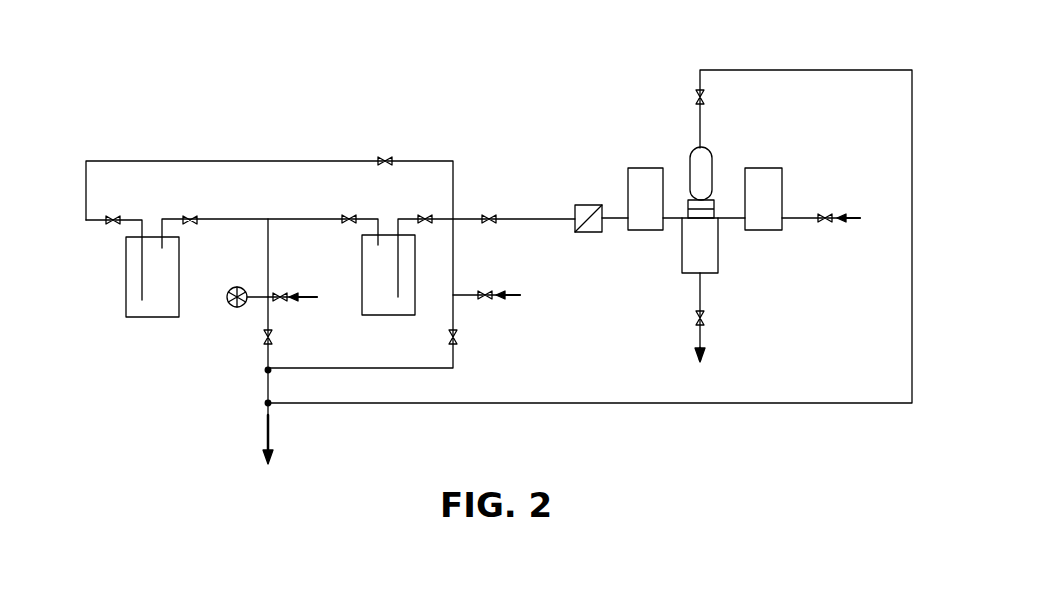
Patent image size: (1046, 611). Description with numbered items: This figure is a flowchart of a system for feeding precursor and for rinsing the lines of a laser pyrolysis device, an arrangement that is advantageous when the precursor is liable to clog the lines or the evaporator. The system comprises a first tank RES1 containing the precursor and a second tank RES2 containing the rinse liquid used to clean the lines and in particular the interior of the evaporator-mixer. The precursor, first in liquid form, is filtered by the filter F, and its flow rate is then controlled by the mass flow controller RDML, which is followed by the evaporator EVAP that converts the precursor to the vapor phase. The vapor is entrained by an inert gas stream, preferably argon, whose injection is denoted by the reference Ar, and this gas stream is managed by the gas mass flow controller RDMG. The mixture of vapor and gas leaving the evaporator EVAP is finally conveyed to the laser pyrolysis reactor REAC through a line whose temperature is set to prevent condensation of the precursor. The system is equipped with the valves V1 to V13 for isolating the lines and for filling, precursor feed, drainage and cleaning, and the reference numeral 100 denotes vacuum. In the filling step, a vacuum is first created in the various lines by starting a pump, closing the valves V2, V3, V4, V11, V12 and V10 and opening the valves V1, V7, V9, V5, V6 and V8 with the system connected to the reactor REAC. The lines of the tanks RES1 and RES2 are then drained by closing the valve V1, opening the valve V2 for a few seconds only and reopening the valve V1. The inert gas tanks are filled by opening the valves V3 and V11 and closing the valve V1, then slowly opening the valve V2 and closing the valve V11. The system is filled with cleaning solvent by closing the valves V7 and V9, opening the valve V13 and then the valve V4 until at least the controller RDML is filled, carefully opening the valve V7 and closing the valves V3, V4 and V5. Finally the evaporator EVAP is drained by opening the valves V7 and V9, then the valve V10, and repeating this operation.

The vacuum 100 is at (269, 456).
The valve V1 is at (262, 340).
The valve V2 is at (283, 290).
The valve V3 is at (189, 213).
The valve V4 is at (115, 213).
The valve V5 is at (385, 155).
The valve V6 is at (488, 213).
The valve V7 is at (695, 97).
The valve V8 is at (705, 317).
The valve V9 is at (457, 333).
The valve V10 is at (488, 289).
The valve V11 is at (350, 212).
The valve V12 is at (428, 212).
The valve V13 is at (827, 212).
The first tank RES1 is at (390, 316).
The second tank RES2 is at (152, 317).
The filter F is at (597, 203).
The mass flow controller RDML is at (648, 167).
The gas mass flow controller RDMG is at (758, 166).
The evaporator EVAP is at (718, 248).
The laser pyrolysis reactor REAC is at (697, 373).
The argon Ar is at (590, 258).